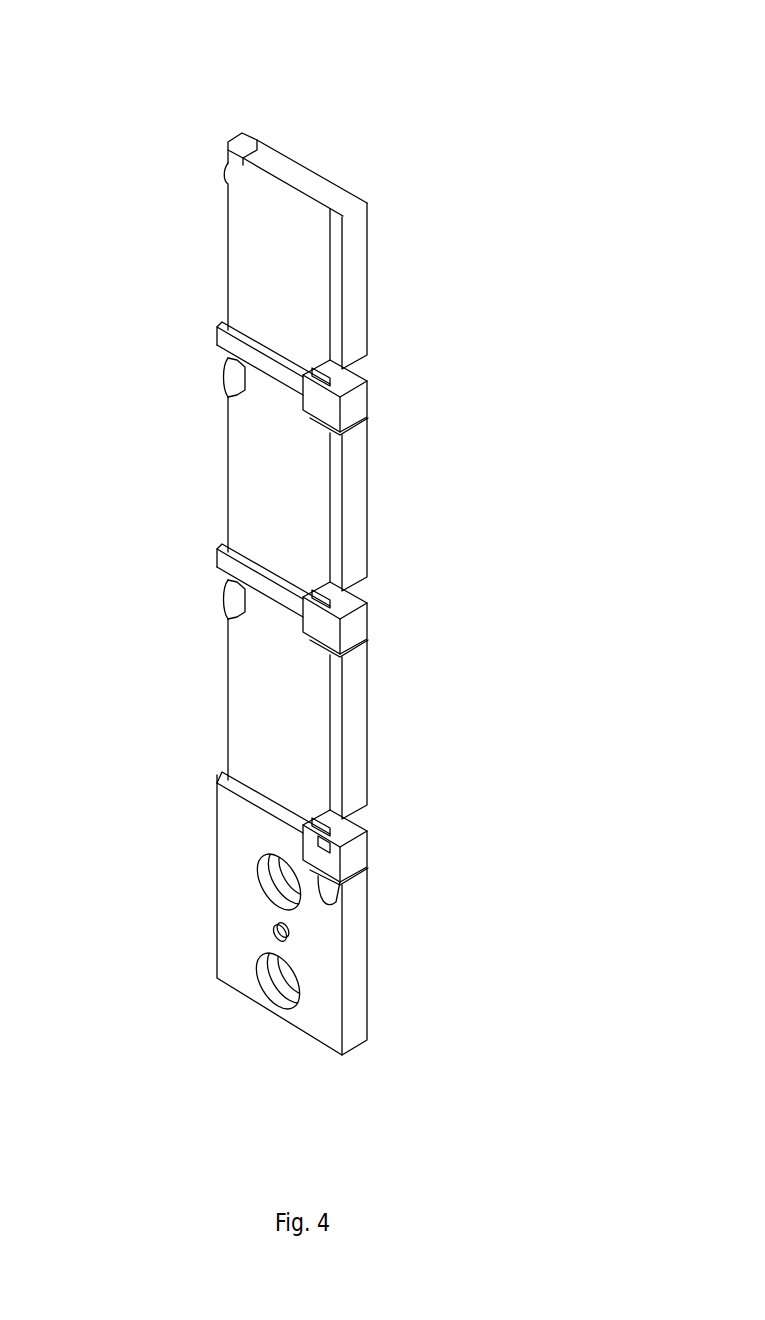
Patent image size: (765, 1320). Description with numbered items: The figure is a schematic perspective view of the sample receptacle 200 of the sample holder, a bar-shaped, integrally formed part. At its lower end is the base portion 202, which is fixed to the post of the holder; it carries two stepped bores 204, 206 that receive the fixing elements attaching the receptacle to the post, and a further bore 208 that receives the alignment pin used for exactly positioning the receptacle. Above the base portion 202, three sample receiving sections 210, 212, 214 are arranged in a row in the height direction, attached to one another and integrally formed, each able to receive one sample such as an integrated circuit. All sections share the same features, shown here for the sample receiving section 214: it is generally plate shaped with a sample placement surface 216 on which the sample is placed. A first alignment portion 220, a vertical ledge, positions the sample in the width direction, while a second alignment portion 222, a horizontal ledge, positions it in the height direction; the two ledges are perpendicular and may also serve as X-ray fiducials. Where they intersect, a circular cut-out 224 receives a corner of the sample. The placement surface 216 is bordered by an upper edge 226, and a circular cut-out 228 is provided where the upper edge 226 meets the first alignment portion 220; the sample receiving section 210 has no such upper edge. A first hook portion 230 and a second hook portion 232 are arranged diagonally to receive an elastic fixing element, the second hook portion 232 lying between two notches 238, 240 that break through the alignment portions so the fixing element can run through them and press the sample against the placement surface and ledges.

The sample receptacle 200 is at (317, 99).
The base portion 202 is at (217, 910).
The stepped bore 204 is at (257, 871).
The stepped bore 206 is at (257, 975).
The bore 208 is at (290, 932).
The sample receiving section 210 is at (368, 273).
The sample receiving section 212 is at (368, 517).
The sample receiving section 214 is at (370, 742).
The sample placement surface 216 is at (252, 697).
The first alignment portion 220 is at (332, 717).
The second alignment portion 222 is at (245, 786).
The circular cut-out 224 is at (336, 844).
The upper edge 226 is at (352, 597).
The circular cut-out 228 is at (333, 664).
The first hook portion 230 is at (228, 594).
The second hook portion 232 is at (370, 833).
The notch 238 is at (333, 828).
The notch 240 is at (330, 914).